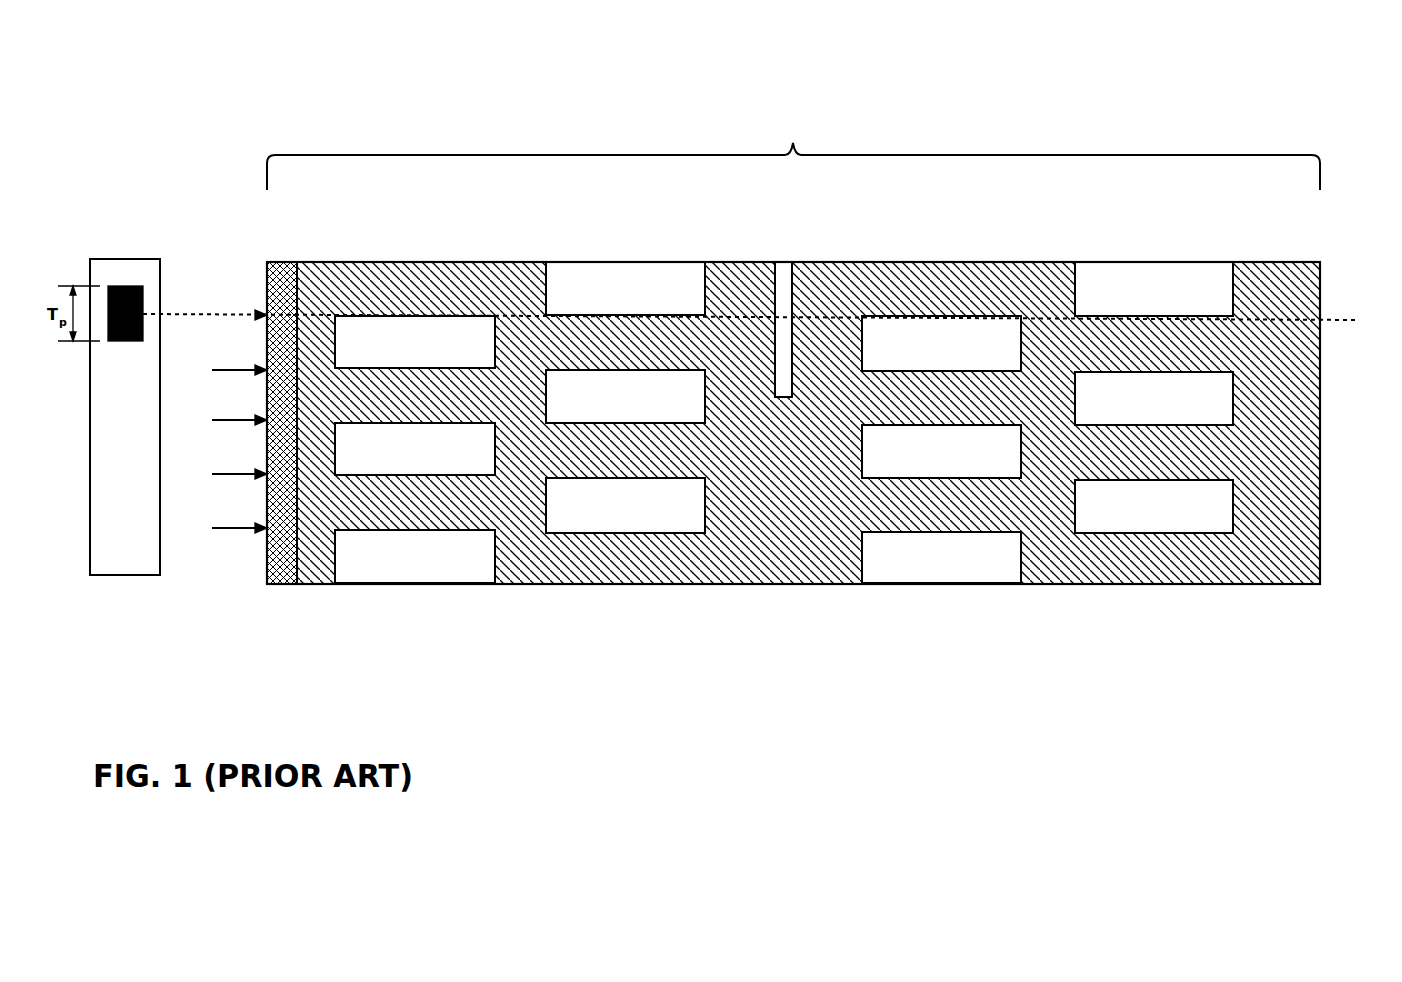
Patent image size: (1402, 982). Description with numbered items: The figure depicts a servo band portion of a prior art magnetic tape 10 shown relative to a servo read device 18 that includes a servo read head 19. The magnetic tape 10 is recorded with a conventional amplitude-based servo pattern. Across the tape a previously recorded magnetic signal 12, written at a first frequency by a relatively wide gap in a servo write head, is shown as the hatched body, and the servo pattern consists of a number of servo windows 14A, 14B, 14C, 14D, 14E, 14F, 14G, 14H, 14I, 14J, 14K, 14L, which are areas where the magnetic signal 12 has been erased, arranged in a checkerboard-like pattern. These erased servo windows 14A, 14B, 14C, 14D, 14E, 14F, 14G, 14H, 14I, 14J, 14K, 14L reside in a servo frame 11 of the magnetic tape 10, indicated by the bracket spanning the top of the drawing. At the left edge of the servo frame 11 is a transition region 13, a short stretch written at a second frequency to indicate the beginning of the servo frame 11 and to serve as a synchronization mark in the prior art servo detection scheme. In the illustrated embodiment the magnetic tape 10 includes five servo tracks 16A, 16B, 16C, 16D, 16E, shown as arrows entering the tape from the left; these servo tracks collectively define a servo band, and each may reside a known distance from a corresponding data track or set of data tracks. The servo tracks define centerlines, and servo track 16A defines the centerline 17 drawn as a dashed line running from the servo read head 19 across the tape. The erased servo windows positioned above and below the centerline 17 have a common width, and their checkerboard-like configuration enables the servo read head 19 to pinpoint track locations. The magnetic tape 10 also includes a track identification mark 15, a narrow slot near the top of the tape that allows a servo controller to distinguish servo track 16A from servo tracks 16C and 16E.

The magnetic tape 10 is at (298, 76).
The servo frame 11 is at (793, 149).
The magnetic signal 12 is at (1250, 572).
The transition region 13 is at (282, 258).
The servo window 14A is at (415, 333).
The servo window 14B is at (625, 280).
The servo window 14C is at (372, 455).
The servo window 14D is at (571, 405).
The servo window 14E is at (387, 565).
The servo window 14F is at (605, 512).
The servo window 14G is at (942, 333).
The servo window 14H is at (1153, 282).
The servo window 14I is at (913, 460).
The servo window 14J is at (1117, 407).
The servo window 14K is at (930, 567).
The servo window 14L is at (1152, 513).
The track identification mark 15 is at (785, 258).
The servo track 16A is at (258, 315).
The servo track 16B is at (217, 370).
The servo track 16C is at (217, 420).
The servo track 16D is at (217, 474).
The servo track 16E is at (217, 528).
The centerline 17 is at (1328, 320).
The servo read device 18 is at (108, 455).
The servo read head 19 is at (127, 280).